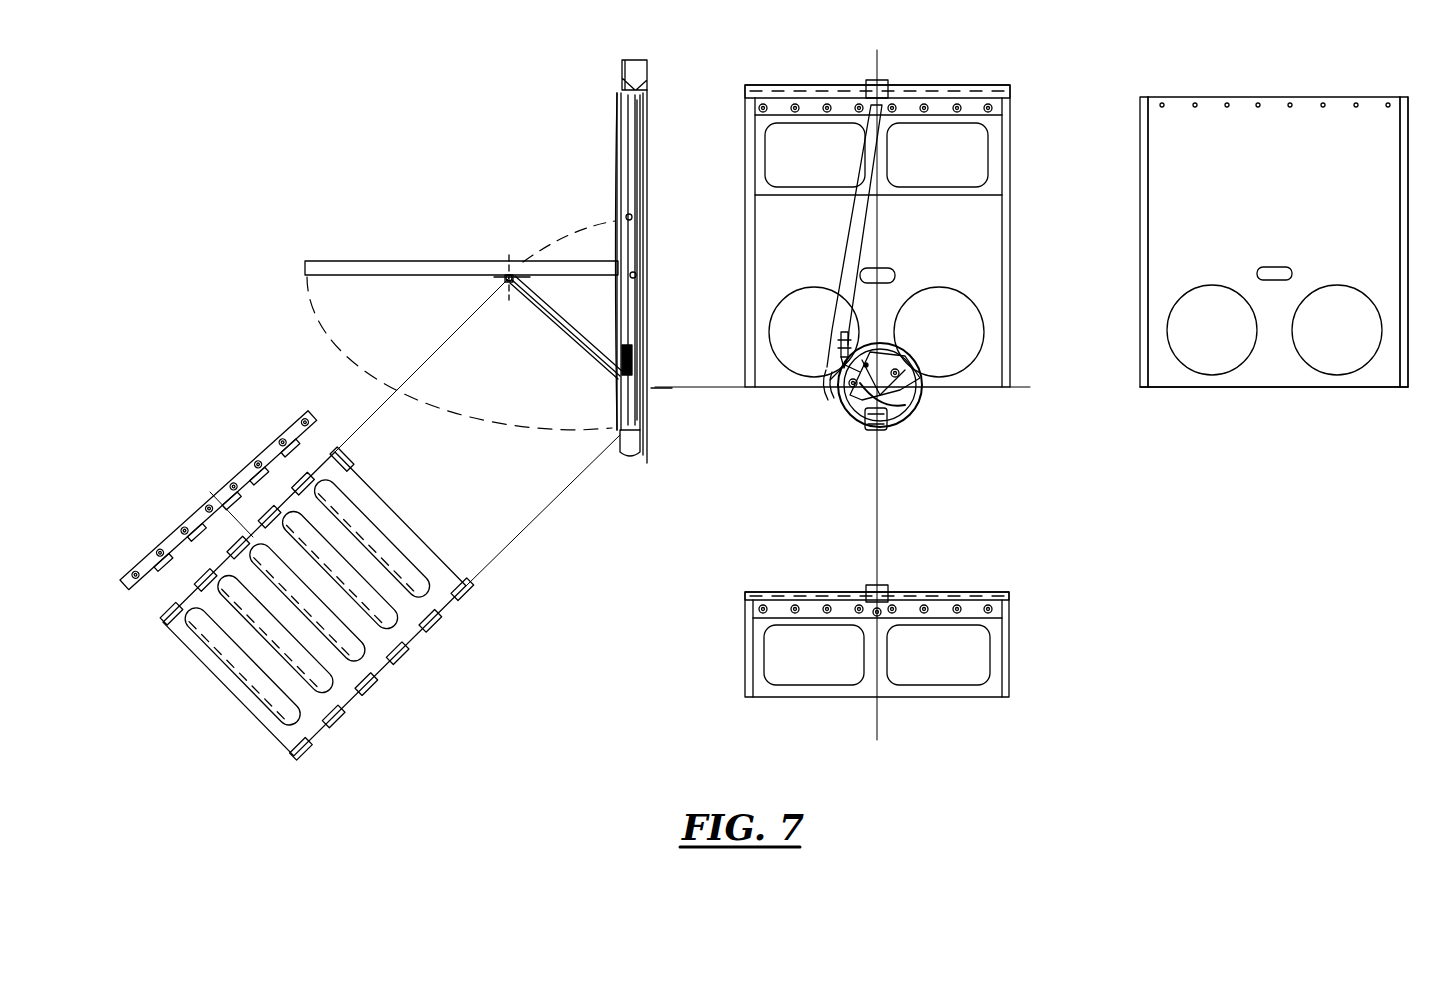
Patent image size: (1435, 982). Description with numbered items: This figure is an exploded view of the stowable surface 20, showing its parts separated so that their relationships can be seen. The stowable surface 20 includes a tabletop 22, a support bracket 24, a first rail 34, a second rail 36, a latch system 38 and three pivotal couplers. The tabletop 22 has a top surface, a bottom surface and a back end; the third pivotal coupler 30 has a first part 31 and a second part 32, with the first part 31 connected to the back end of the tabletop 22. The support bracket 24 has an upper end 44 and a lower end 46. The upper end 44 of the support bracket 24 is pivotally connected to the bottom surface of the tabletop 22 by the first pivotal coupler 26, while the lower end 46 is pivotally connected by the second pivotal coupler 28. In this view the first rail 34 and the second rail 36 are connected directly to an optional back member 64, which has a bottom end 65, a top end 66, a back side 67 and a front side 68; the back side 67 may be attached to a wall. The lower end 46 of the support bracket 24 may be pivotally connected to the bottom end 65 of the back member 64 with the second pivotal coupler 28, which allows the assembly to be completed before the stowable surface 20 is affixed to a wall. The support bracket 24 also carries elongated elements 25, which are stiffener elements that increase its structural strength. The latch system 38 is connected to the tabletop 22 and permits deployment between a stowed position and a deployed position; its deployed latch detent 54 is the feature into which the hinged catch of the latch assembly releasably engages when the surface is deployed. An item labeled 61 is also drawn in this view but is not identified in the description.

The stowable surface 20 is at (425, 115).
The tabletop 22 is at (388, 268).
The support bracket 24 is at (447, 580).
The elongated elements 25 is at (413, 612).
The first pivotal coupler 26 is at (487, 284).
The second pivotal coupler 28 is at (650, 405).
The third pivotal coupler 30 is at (1012, 598).
The first part 31 is at (968, 605).
The second part 32 is at (992, 688).
The first rail 34 is at (1405, 372).
The second rail 36 is at (1143, 150).
The latch system 38 is at (930, 412).
The upper end 44 is at (183, 520).
The lower end 46 is at (297, 757).
The deployed latch detent 54 is at (1272, 282).
The lever 61 is at (800, 372).
The back member 64 is at (1170, 388).
The bottom end 65 is at (1290, 383).
The top end 66 is at (1243, 115).
The back side 67 is at (645, 140).
The front side 68 is at (1168, 262).